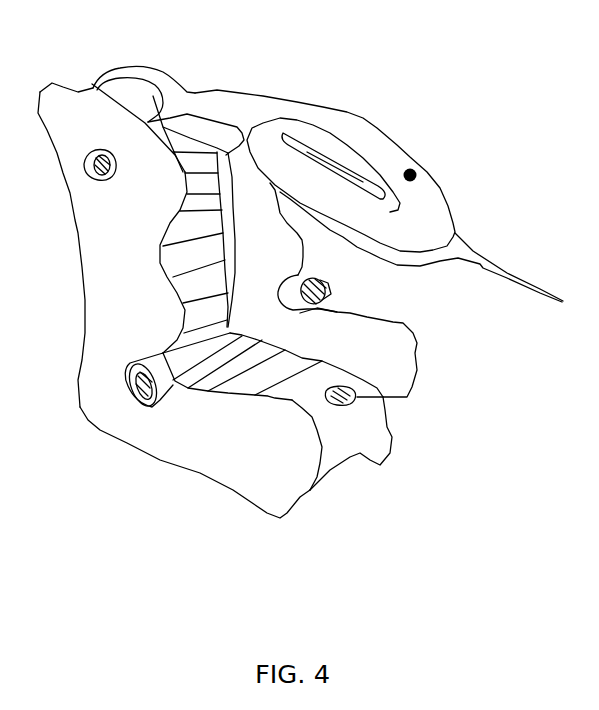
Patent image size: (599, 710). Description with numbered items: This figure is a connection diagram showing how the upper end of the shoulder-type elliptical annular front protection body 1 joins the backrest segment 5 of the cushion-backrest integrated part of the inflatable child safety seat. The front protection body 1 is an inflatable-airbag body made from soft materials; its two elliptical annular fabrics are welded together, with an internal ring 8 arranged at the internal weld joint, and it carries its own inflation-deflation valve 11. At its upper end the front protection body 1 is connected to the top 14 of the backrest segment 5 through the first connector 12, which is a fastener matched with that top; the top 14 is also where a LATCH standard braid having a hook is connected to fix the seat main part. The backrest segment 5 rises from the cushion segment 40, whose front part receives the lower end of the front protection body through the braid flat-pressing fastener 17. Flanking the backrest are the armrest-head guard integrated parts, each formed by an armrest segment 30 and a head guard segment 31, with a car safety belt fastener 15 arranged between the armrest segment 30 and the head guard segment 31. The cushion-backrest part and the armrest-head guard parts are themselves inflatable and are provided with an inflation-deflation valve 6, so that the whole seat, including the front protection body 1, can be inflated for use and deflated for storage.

The shoulder-type elliptical annular front protection body 1 is at (325, 115).
The internal ring 8 is at (347, 157).
The inflation-deflation valve 11 is at (413, 171).
The first connector 12 is at (127, 73).
The top 14 is at (92, 84).
The inflation-deflation valve 6 is at (85, 164).
The head guard segment 31 is at (130, 225).
The backrest segment 5 is at (198, 255).
The car safety belt fastener 15 is at (78, 443).
The cushion segment 40 is at (300, 373).
The braid flat-pressing fastener 17 is at (383, 399).
The armrest segment 30 is at (227, 437).